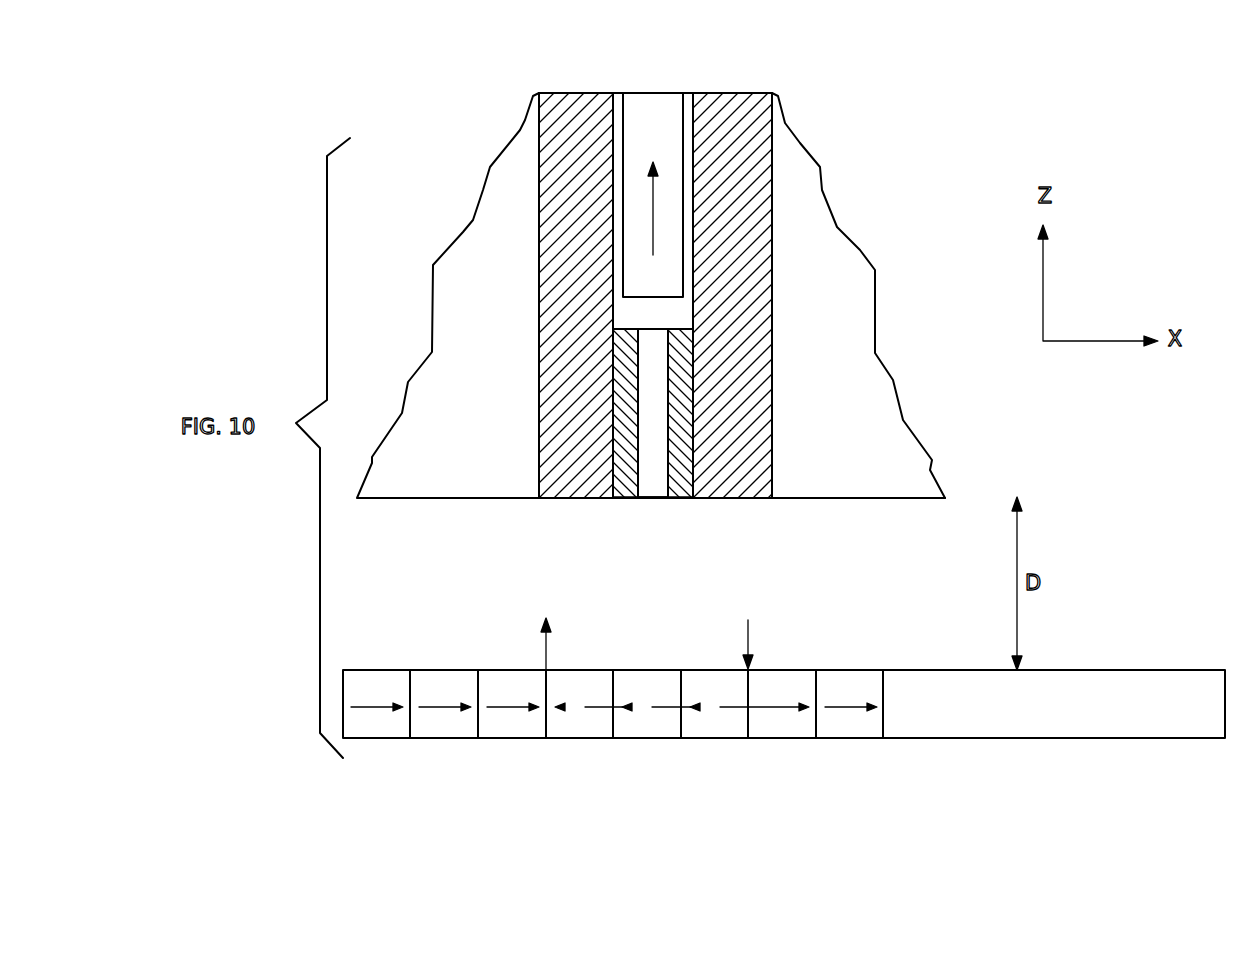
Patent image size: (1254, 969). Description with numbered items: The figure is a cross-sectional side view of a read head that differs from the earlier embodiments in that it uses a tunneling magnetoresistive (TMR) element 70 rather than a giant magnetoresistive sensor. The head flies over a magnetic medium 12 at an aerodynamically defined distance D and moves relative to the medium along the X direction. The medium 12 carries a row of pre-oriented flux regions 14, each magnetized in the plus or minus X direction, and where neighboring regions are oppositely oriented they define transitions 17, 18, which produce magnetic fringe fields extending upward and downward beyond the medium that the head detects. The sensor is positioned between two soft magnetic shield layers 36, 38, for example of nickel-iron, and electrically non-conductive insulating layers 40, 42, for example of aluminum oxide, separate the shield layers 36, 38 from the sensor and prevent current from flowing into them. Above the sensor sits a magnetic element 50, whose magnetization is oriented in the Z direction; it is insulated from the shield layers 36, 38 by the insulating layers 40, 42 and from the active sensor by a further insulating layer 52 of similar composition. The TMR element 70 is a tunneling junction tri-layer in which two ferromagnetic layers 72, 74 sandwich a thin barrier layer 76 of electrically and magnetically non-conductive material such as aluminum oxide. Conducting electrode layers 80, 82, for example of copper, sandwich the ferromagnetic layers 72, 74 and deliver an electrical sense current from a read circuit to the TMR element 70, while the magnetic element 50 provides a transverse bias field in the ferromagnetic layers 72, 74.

The magnetic medium 12 is at (1105, 738).
The pre-oriented flux regions 14 is at (387, 738).
The transition 17 is at (555, 750).
The transition 18 is at (761, 752).
The shield layer 36 is at (817, 220).
The shield layer 38 is at (460, 340).
The insulating layer 40 is at (693, 107).
The insulating layer 42 is at (613, 120).
The magnetic element 50 is at (640, 108).
The insulating layer 52 is at (625, 310).
The tunneling magnetoresistive element 70 is at (634, 566).
The ferromagnetic layer 72 is at (673, 498).
The ferromagnetic layer 74 is at (622, 498).
The barrier layer 76 is at (657, 498).
The conducting electrode layer 80 is at (737, 498).
The conducting electrode layer 82 is at (550, 498).